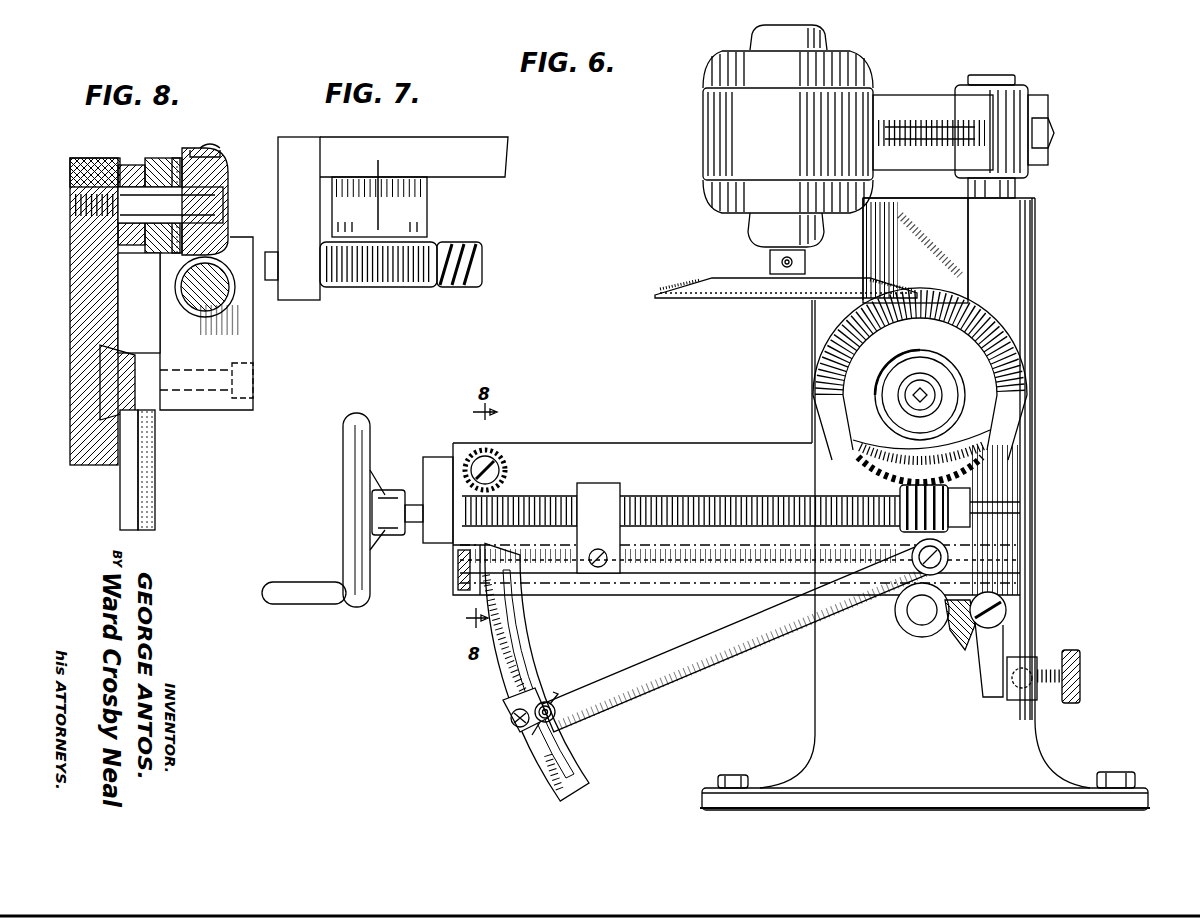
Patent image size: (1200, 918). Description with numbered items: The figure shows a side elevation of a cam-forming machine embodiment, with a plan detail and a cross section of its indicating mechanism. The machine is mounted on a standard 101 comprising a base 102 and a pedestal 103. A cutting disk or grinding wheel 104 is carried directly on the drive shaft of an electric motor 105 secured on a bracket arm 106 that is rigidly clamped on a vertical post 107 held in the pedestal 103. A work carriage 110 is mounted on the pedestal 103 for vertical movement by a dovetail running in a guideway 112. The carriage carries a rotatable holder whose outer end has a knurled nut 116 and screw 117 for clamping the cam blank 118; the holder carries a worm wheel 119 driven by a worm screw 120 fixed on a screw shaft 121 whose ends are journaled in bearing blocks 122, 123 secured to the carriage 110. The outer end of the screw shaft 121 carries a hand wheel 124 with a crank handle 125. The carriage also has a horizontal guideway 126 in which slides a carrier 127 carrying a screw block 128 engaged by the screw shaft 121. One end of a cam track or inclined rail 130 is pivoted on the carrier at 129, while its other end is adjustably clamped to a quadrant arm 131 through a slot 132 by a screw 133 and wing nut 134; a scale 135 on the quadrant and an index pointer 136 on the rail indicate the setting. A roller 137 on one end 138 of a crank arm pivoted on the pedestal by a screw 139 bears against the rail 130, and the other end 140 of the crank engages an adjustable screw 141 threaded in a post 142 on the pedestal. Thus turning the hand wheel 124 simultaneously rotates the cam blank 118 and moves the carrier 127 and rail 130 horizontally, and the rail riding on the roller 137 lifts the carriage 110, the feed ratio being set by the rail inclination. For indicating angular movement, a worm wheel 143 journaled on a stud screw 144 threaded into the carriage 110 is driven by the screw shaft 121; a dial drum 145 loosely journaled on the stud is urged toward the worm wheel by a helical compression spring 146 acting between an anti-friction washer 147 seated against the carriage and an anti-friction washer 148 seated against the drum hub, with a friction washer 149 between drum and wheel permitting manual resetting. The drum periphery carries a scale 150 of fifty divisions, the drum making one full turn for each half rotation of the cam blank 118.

In FIG. 6, the standard 101 is at (812, 713).
In FIG. 6, the base 102 is at (1132, 788).
In FIG. 6, the pedestal 103 is at (1037, 312).
In FIG. 6, the cutting disk or grinding wheel 104 is at (672, 283).
In FIG. 6, the electric motor 105 is at (715, 75).
In FIG. 6, the bracket arm 106 is at (912, 100).
In FIG. 6, the vertical post 107 is at (1000, 85).
In FIG. 6, the work carriage 110 is at (573, 450).
In FIG. 7, the work carriage 110 is at (428, 128).
In FIG. 8, the work carriage 110 is at (78, 270).
In FIG. 6, the guideway 112 is at (955, 235).
In FIG. 6, the knurled nut 116 is at (895, 372).
In FIG. 6, the screw 117 is at (913, 400).
In FIG. 6, the cam blank 118 is at (855, 362).
In FIG. 6, the worm wheel 119 is at (990, 460).
In FIG. 6, the worm screw 120 is at (915, 496).
In FIG. 6, the screw shaft 121 is at (673, 496).
In FIG. 7, the screw shaft 121 is at (483, 263).
In FIG. 8, the screw shaft 121 is at (183, 288).
In FIG. 6, the bearing block 122 is at (1003, 525).
In FIG. 6, the bearing block 123 is at (422, 457).
In FIG. 7, the bearing block 123 is at (305, 295).
In FIG. 6, the hand wheel 124 is at (350, 478).
In FIG. 6, the crank handle 125 is at (295, 582).
In FIG. 6, the guideway 126 is at (460, 567).
In FIG. 6, the carrier 127 is at (672, 580).
In FIG. 8, the carrier 127 is at (100, 402).
In FIG. 6, the screw block 128 is at (600, 483).
In FIG. 8, the screw block 128 is at (255, 355).
In FIG. 6, the pivot 129 is at (912, 558).
In FIG. 6, the cam track or inclined rail 130 is at (650, 690).
In FIG. 8, the cam track or inclined rail 130 is at (156, 471).
In FIG. 6, the quadrant arm 131 is at (535, 662).
In FIG. 8, the quadrant arm 131 is at (120, 490).
In FIG. 6, the slot 132 is at (515, 627).
In FIG. 6, the screw 133 is at (558, 716).
In FIG. 6, the wing nut 134 is at (518, 728).
In FIG. 6, the scale 135 is at (497, 665).
In FIG. 6, the index pointer 136 is at (512, 704).
In FIG. 6, the roller 137 is at (918, 627).
In FIG. 6, the crank arm end 138 is at (958, 620).
In FIG. 6, the screw 139 is at (1006, 610).
In FIG. 6, the crank end 140 is at (995, 648).
In FIG. 6, the adjustable screw 141 is at (1080, 672).
In FIG. 6, the post 142 is at (1020, 700).
In FIG. 6, the worm wheel 143 is at (500, 450).
In FIG. 7, the worm wheel 143 is at (388, 283).
In FIG. 8, the worm wheel 143 is at (210, 145).
In FIG. 8, the stud screw 144 is at (205, 195).
In FIG. 7, the dial drum 145 is at (420, 215).
In FIG. 8, the dial drum 145 is at (162, 157).
In FIG. 8, the helical compression spring 146 is at (122, 162).
In FIG. 8, the anti-friction washer 147 is at (95, 160).
In FIG. 8, the anti-friction washer 148 is at (140, 157).
In FIG. 8, the friction washer 149 is at (185, 150).
In FIG. 7, the scale 150 is at (398, 180).